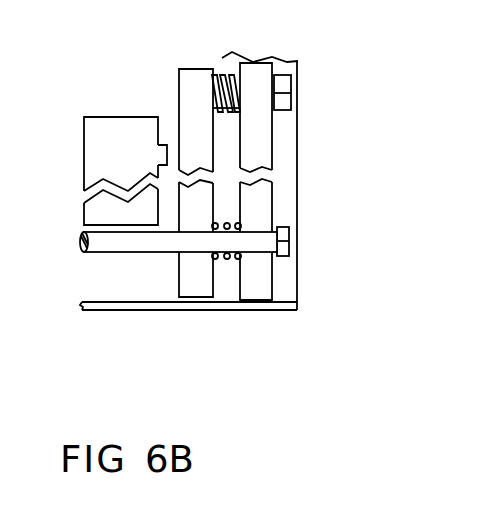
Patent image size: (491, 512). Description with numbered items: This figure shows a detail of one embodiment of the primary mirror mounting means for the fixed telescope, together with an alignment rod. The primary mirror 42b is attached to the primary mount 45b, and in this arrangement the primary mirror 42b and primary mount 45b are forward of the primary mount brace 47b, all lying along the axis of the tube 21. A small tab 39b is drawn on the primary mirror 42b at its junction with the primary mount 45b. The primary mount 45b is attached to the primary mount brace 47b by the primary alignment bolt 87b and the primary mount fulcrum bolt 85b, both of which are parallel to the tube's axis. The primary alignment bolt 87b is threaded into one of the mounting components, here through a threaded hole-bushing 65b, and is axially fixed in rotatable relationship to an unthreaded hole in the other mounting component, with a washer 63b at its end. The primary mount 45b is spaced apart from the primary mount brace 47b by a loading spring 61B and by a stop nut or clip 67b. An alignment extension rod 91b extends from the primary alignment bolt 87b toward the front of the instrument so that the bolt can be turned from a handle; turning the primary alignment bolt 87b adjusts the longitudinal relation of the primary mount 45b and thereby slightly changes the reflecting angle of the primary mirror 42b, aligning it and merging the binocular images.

The tube 21 is at (297, 62).
The primary mirror 42b is at (84, 117).
The tab 39b is at (160, 146).
The primary mount 45b is at (178, 68).
The primary mount brace 47b is at (267, 66).
The loading spring 61B is at (229, 227).
The primary mount fulcrum bolt 85b is at (294, 88).
The stop nut or clip 67b is at (292, 110).
The threaded hole-bushing 65b is at (185, 253).
The alignment extension rod 91b is at (82, 236).
The primary alignment bolt 87b is at (256, 225).
The washer 63b is at (277, 257).